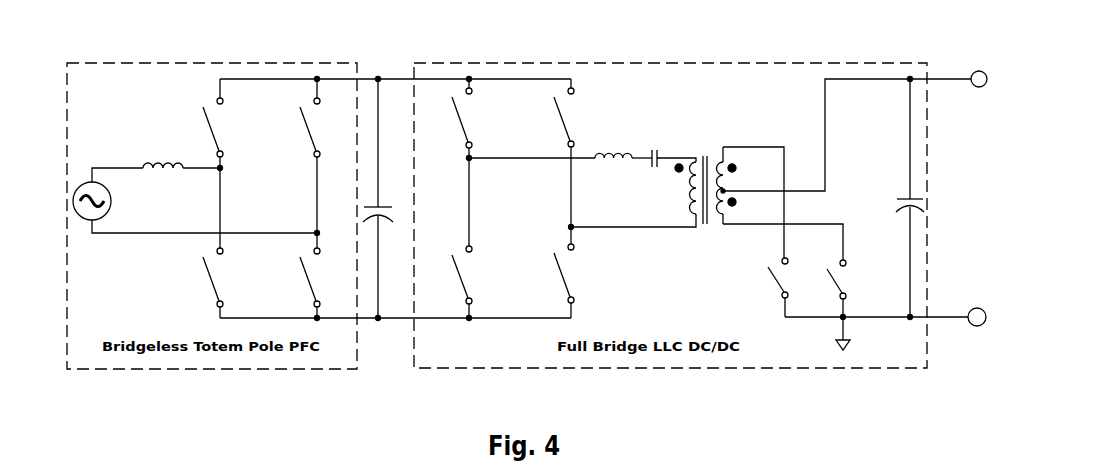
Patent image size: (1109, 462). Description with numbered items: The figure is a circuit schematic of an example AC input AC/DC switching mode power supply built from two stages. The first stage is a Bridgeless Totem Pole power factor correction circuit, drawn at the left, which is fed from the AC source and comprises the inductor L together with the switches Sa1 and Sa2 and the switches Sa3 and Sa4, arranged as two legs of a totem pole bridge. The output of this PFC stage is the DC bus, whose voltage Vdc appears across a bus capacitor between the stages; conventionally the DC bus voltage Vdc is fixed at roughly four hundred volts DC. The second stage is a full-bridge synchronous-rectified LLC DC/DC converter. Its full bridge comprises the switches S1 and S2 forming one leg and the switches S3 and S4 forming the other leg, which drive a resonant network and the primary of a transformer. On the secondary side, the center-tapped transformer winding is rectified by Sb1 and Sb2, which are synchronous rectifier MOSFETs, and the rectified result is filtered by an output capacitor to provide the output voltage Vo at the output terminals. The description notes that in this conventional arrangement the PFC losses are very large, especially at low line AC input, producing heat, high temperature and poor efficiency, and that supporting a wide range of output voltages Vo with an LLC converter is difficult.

The switch Sa1 is at (185, 127).
The switch Sa2 is at (185, 277).
The switch Sa3 is at (285, 127).
The switch Sa4 is at (285, 277).
The inductor L is at (181, 157).
The DC bus voltage Vdc is at (380, 74).
The switch S1 is at (482, 118).
The switch S2 is at (482, 275).
The switch S3 is at (583, 117).
The switch S4 is at (583, 273).
The SR MOSFET Sb1 is at (755, 278).
The SR MOSFET Sb2 is at (859, 279).
The output voltage Vo is at (941, 196).